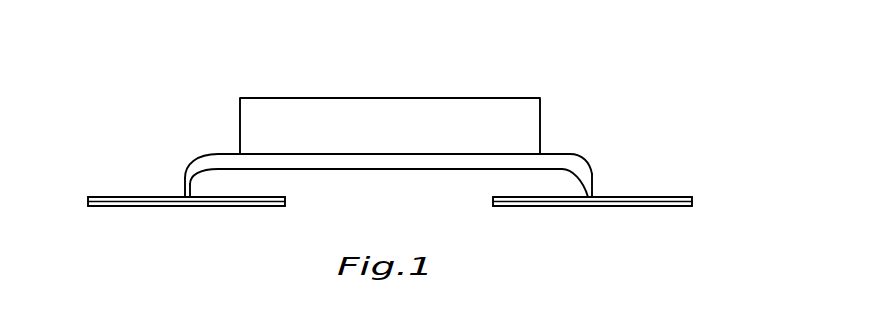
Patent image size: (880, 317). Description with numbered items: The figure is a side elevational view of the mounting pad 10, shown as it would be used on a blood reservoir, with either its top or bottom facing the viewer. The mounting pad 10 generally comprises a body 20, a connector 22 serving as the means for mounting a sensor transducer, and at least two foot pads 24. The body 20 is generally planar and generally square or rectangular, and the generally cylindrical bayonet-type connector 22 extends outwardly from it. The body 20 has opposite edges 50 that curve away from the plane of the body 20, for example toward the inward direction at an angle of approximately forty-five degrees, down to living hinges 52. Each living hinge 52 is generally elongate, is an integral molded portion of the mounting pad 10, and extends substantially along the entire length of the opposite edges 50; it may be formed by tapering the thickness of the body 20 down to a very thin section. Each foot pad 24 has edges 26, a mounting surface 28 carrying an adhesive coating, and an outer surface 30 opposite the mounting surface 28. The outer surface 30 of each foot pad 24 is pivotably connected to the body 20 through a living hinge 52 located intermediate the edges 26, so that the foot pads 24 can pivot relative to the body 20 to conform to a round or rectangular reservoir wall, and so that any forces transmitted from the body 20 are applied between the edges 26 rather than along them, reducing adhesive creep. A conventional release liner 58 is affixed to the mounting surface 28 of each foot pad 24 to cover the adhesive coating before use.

The mounting pad 10 is at (471, 64).
The body 20 is at (553, 153).
The bayonet-type connector 22 is at (350, 97).
The foot pad 24 is at (120, 222).
The edges 26 is at (88, 197).
The mounting surface 28 is at (220, 207).
The outer surface 30 is at (108, 197).
The opposite edges 50 is at (193, 165).
The living hinge 52 is at (183, 196).
The release liner 58 is at (98, 207).